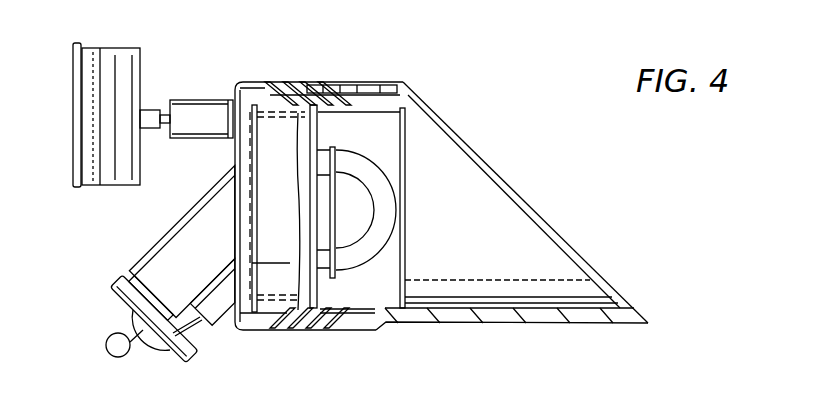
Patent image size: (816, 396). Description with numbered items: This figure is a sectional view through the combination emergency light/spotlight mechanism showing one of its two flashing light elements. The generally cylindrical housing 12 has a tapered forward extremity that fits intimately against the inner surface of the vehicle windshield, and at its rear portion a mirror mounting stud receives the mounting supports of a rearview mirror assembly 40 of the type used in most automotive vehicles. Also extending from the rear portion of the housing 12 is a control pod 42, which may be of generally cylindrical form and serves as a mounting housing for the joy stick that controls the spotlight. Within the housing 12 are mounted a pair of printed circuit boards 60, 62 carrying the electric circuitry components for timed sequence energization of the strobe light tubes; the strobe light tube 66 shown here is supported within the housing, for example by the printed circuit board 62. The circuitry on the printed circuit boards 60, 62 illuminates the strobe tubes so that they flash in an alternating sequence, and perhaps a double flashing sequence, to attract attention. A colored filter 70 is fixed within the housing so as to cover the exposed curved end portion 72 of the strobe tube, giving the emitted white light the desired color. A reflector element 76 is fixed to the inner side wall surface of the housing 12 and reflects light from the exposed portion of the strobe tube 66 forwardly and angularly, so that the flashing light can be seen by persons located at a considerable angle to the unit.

The housing 12 is at (543, 320).
The mirror assembly 40 is at (112, 50).
The control pod 42 is at (145, 253).
The printed circuit board 60 is at (243, 78).
The printed circuit board 62 is at (320, 140).
The strobe light tube 66 is at (367, 170).
The colored filter 70 is at (405, 272).
The exposed curved end portions 72 is at (396, 218).
The reflector element 76 is at (525, 243).